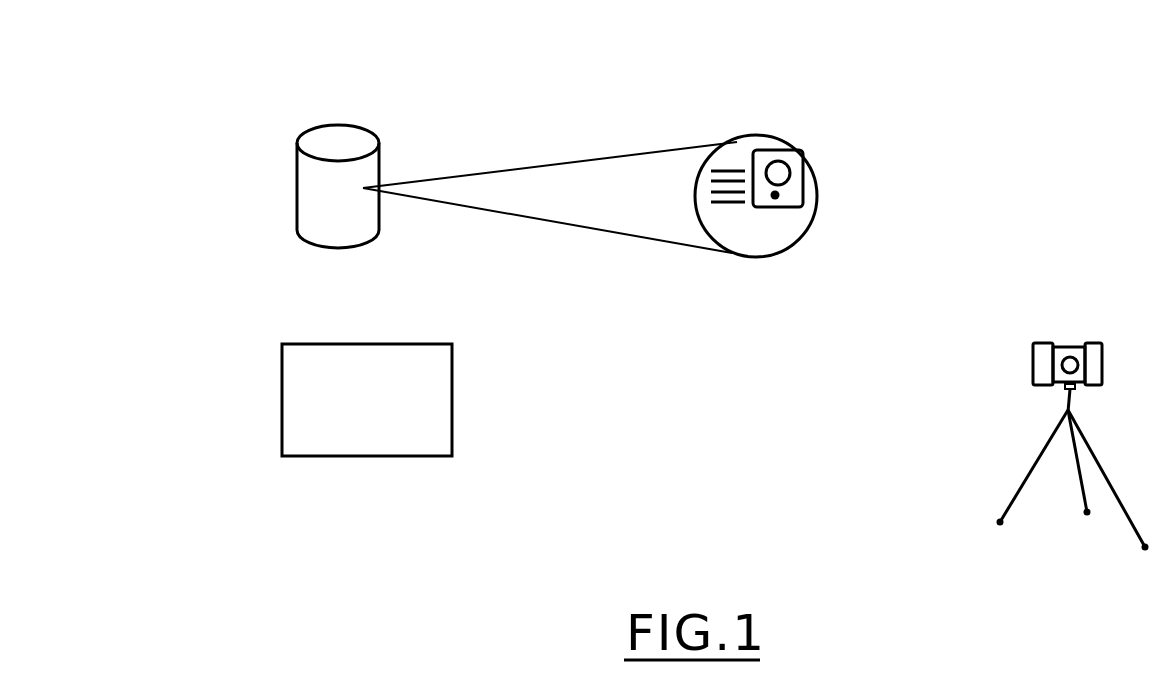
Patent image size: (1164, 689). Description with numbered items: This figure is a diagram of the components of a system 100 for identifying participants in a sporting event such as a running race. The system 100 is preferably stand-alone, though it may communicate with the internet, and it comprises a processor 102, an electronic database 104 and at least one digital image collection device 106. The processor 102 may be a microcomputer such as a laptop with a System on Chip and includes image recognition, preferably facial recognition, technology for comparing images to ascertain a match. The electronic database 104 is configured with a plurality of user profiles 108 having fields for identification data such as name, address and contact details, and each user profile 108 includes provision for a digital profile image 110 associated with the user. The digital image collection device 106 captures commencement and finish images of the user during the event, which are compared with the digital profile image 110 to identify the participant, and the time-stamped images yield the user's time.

The system 100 is at (212, 108).
The processor 102 is at (396, 410).
The electronic database 104 is at (373, 168).
The digital image collection device 106 is at (1042, 365).
The user profile 108 is at (732, 158).
The digital profile image 110 is at (790, 186).